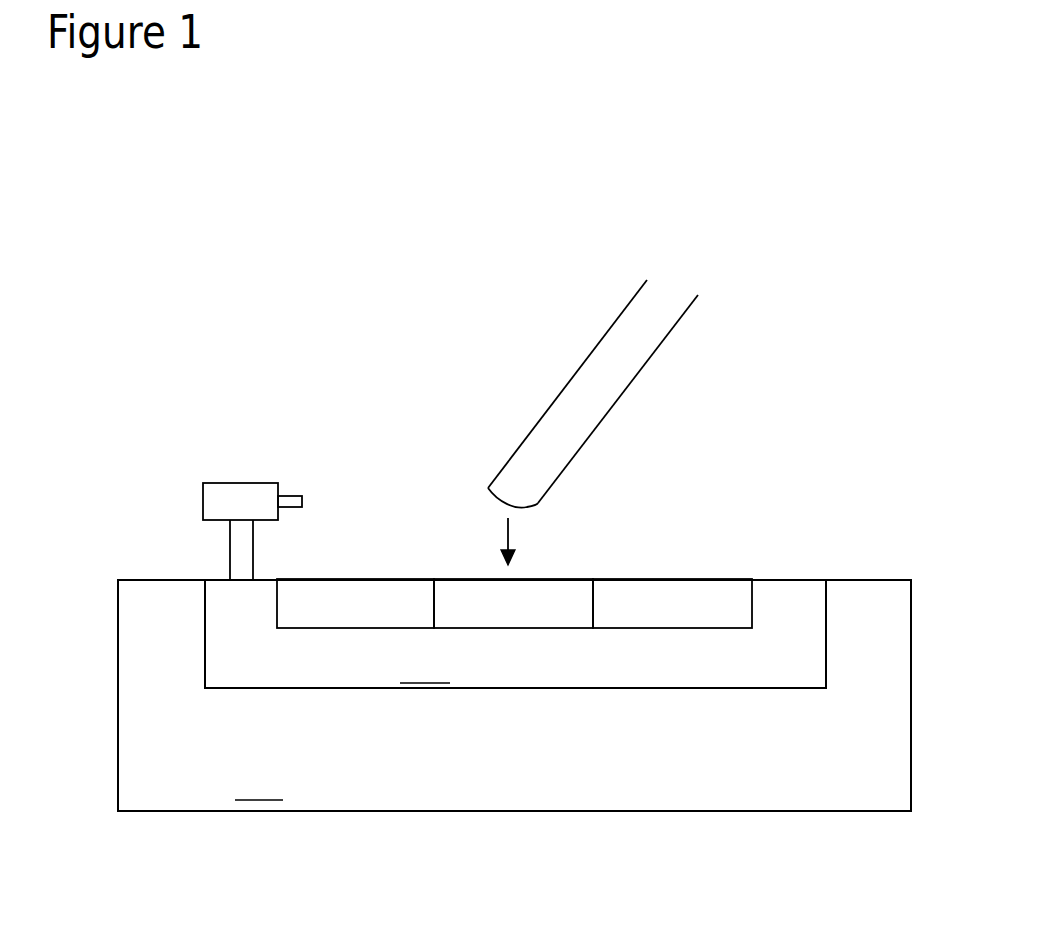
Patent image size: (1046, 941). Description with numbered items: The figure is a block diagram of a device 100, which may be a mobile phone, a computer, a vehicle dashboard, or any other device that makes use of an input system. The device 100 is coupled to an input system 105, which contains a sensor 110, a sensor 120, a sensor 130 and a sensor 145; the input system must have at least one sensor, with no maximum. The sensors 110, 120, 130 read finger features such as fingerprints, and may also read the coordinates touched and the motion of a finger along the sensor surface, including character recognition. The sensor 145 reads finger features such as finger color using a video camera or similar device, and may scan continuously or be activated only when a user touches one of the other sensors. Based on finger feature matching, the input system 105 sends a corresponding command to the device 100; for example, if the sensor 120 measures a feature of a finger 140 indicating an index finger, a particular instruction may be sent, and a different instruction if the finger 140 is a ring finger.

The device 100 is at (514, 695).
The input system 105 is at (515, 634).
The sensor 110 is at (277, 603).
The sensor 120 is at (541, 628).
The sensor 130 is at (753, 602).
The finger 140 is at (653, 348).
The sensor 145 is at (203, 500).